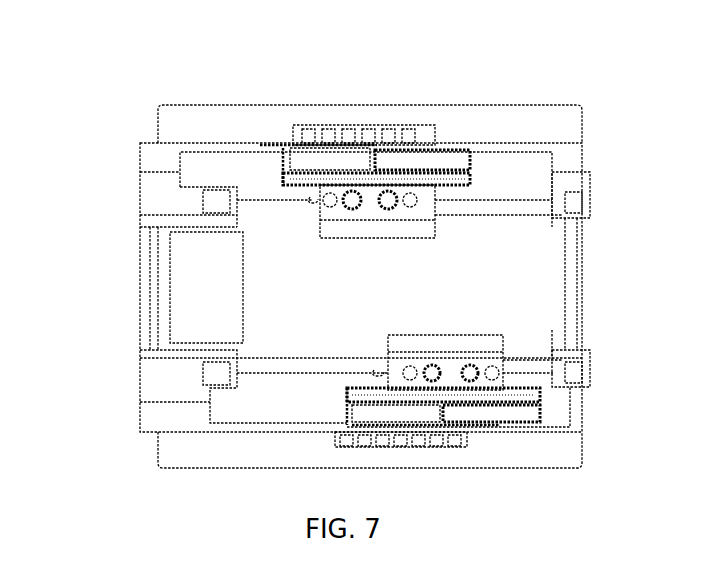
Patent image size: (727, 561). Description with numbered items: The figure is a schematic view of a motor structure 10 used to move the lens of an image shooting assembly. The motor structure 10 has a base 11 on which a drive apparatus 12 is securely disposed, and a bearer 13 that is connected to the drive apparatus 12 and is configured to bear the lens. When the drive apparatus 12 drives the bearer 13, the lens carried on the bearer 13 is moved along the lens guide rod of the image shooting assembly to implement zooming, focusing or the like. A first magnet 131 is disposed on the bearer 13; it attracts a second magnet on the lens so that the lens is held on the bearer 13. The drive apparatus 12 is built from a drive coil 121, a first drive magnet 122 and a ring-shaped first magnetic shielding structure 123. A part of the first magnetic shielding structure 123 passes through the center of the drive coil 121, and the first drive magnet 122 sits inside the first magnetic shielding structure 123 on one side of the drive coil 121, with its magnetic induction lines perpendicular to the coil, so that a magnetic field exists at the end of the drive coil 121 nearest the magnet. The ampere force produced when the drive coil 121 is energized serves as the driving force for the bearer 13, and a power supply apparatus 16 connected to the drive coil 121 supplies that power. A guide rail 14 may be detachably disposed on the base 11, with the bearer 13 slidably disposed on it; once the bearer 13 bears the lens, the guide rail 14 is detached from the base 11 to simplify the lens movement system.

The motor structure 10 is at (97, 97).
The base 11 is at (155, 192).
The drive apparatus 12 is at (432, 36).
The drive coil 121 is at (317, 155).
The first drive magnet 122 is at (360, 173).
The first magnetic shielding structure 123 is at (393, 183).
The bearer 13 is at (430, 203).
The first magnet 131 is at (390, 212).
The guide rail 14 is at (560, 216).
The power supply apparatus 16 is at (432, 130).